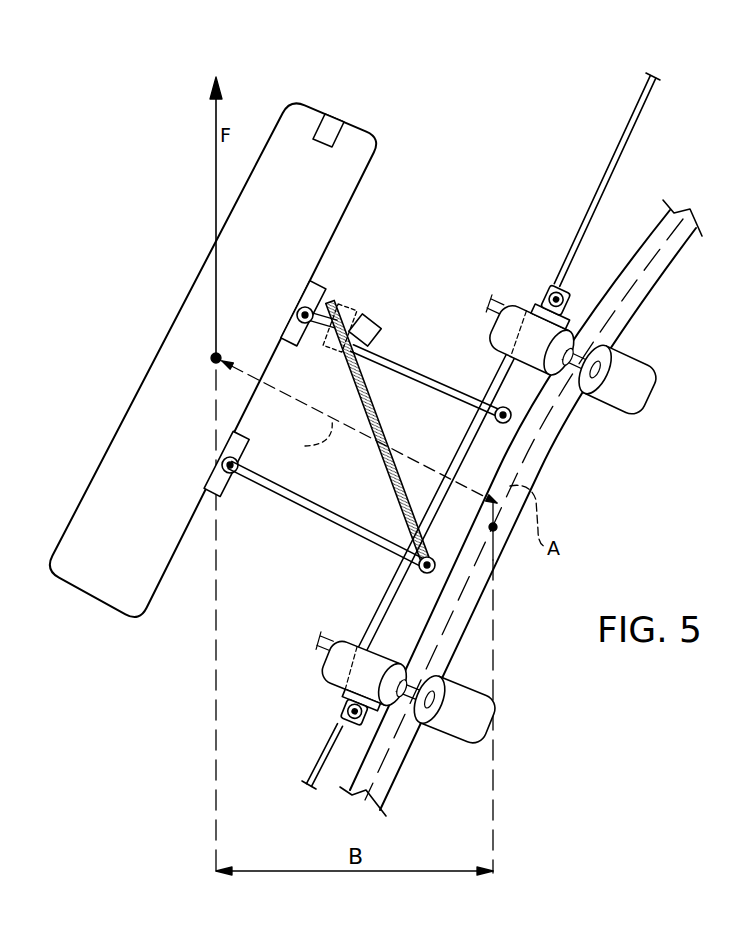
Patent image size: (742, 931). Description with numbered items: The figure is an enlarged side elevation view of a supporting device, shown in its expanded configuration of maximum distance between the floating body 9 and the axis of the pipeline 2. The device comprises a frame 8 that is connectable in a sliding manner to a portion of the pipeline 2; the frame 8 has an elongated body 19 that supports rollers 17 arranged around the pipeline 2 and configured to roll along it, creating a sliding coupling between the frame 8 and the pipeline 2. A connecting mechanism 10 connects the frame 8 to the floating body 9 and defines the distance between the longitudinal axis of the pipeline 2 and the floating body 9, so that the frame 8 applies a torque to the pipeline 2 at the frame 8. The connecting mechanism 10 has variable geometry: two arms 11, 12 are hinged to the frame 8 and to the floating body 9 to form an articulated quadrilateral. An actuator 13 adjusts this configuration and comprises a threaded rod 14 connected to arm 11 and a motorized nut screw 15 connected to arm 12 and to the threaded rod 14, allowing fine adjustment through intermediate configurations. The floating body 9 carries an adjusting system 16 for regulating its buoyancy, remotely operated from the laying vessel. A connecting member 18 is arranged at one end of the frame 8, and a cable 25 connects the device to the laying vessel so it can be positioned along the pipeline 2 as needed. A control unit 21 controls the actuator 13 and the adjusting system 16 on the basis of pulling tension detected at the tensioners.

The pipeline 2 is at (453, 630).
The frame 8 is at (463, 338).
The floating body 9 is at (226, 332).
The connecting mechanism 10 is at (357, 416).
The arm 11 is at (292, 505).
The arm 12 is at (432, 388).
The actuator 13 is at (358, 300).
The threaded rod 14 is at (392, 477).
The motorized nut screw 15 is at (372, 320).
The adjusting system 16 is at (335, 128).
The rollers 17 is at (517, 322).
The connecting member 18 is at (546, 282).
The elongated body 19 is at (426, 456).
The control unit 21 is at (470, 427).
The cable 25 is at (618, 148).